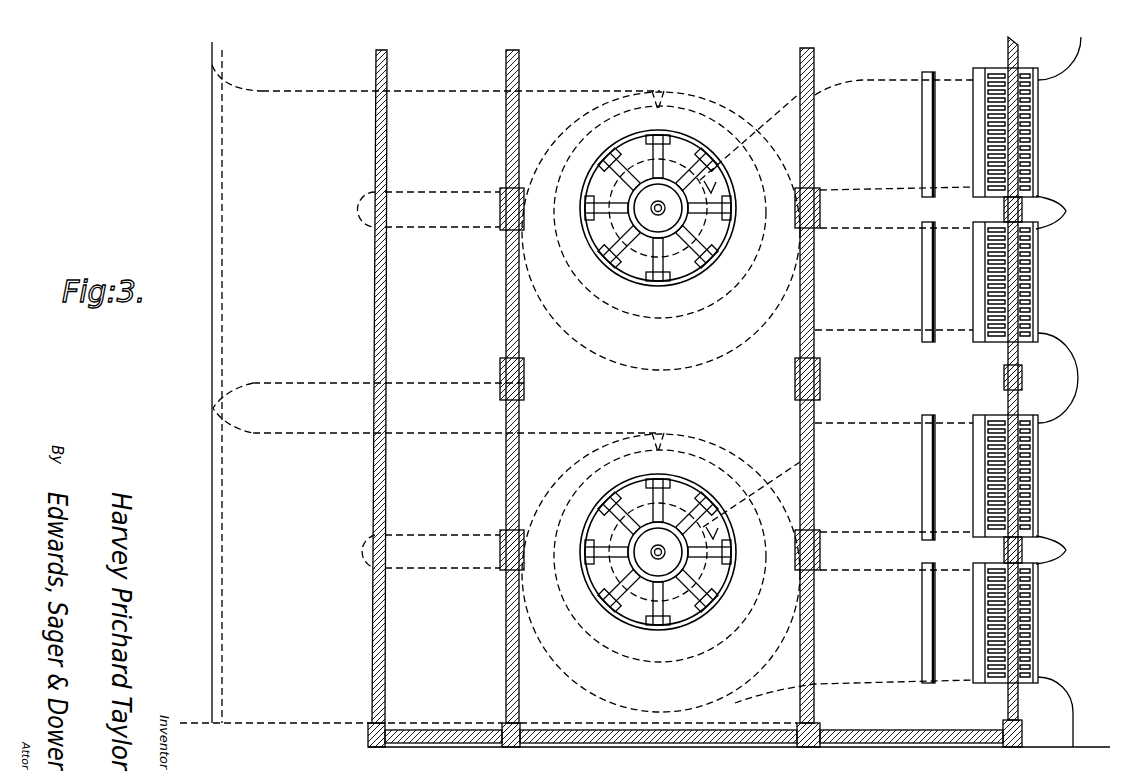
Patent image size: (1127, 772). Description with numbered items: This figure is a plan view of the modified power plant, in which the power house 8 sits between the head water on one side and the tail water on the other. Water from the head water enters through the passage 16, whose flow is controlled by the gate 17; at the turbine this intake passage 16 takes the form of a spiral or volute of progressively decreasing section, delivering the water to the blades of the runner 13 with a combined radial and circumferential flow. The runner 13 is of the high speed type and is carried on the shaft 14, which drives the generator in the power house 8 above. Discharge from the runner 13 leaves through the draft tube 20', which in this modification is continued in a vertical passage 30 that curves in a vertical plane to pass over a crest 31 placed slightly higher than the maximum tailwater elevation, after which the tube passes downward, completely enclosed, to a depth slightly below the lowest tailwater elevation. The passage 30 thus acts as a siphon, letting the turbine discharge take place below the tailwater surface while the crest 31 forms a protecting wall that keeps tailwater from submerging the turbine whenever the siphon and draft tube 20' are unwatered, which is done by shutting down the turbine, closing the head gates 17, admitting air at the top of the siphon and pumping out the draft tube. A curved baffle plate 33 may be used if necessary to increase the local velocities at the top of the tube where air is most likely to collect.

The power house 8 is at (378, 468).
The turbine runner 13 is at (698, 255).
The shaft 14 is at (656, 212).
The passage 16 is at (854, 391).
The gate 17 is at (928, 153).
The draft tube 20' is at (661, 402).
The vertical passage 30 is at (592, 685).
The crest 31 is at (367, 680).
The curved baffle plate 33 is at (372, 222).